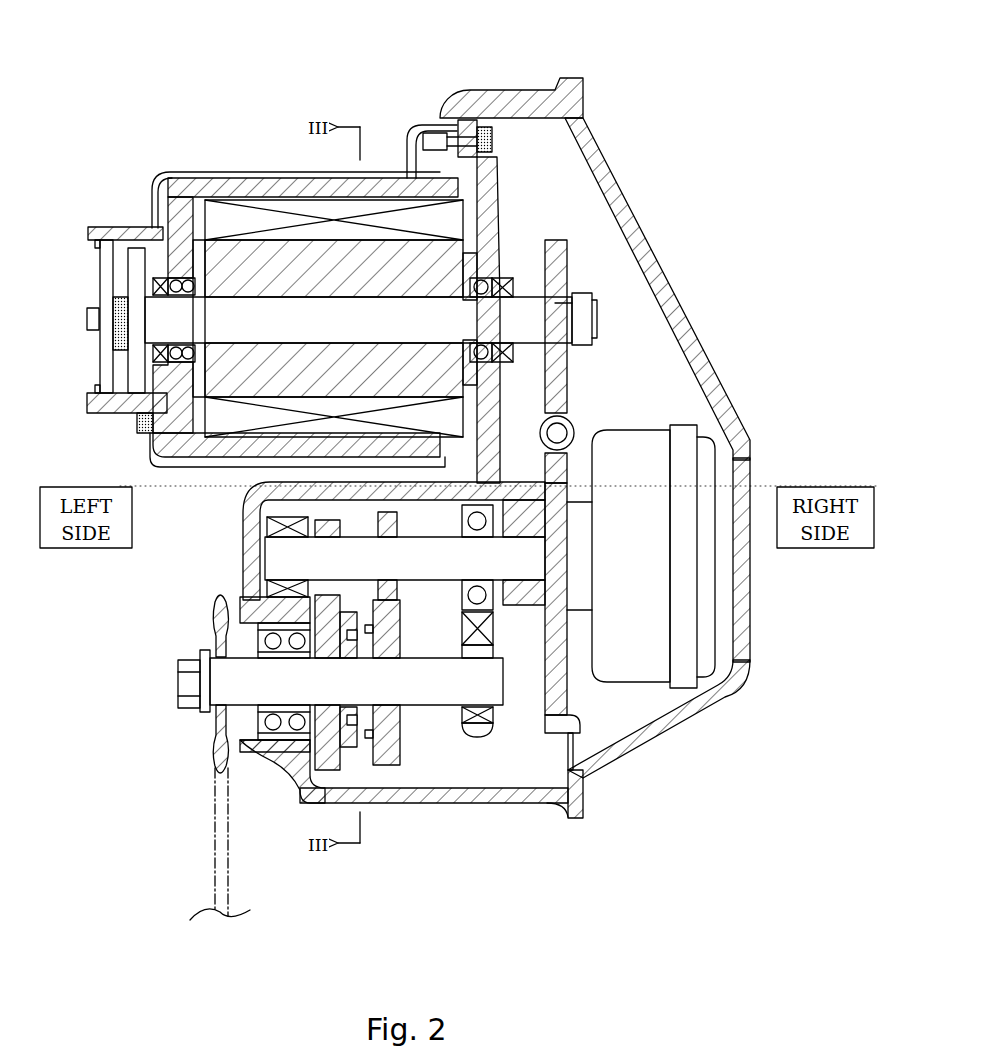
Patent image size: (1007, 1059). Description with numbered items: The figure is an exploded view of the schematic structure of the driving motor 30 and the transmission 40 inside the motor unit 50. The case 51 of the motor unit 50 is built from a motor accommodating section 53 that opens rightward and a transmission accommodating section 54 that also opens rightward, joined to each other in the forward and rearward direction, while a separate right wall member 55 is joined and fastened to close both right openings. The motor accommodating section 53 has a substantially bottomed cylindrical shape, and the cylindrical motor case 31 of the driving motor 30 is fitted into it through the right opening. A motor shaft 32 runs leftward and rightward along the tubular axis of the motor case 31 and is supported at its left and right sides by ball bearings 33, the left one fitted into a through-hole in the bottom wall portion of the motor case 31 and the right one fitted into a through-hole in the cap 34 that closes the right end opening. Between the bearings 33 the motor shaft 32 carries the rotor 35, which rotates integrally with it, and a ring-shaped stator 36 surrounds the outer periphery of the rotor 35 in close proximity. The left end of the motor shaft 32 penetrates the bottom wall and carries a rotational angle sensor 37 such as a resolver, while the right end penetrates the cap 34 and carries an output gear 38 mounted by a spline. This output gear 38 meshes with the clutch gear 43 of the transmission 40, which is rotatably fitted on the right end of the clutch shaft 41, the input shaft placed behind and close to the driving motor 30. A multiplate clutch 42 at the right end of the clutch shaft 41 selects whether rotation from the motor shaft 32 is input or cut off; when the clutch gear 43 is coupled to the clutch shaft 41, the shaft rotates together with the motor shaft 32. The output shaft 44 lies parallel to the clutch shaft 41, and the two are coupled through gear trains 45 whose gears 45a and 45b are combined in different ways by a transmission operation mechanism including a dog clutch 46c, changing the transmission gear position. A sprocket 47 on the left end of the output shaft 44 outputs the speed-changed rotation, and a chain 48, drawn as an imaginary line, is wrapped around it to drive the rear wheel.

The driving motor 30 is at (520, 192).
The motor case 31 is at (240, 178).
The motor shaft 32 is at (555, 325).
The ball bearings 33 is at (215, 292).
The cap 34 is at (500, 226).
The rotor 35 is at (240, 395).
The stator 36 is at (252, 440).
The rotational angle sensor 37 is at (122, 274).
The output gear 38 is at (575, 365).
The transmission 40 is at (600, 708).
The clutch shaft 41 is at (280, 560).
The multiplate clutch 42 is at (720, 470).
The clutch gear 43 is at (550, 710).
The output shaft 44 is at (240, 680).
The gear trains 45 is at (310, 770).
The gear 45a is at (395, 735).
The gear 45b is at (395, 585).
The dog clutch 46c is at (355, 750).
The sprocket 47 is at (215, 755).
The chain 48 is at (213, 850).
The motor unit 50 is at (702, 160).
The case 51 is at (460, 82).
The motor accommodating section 53 is at (200, 165).
The transmission accommodating section 54 is at (496, 808).
The right wall member 55 is at (680, 300).